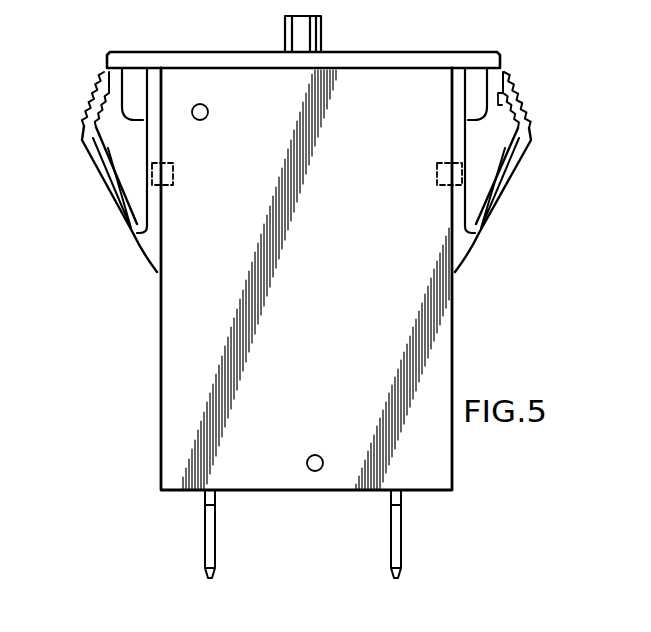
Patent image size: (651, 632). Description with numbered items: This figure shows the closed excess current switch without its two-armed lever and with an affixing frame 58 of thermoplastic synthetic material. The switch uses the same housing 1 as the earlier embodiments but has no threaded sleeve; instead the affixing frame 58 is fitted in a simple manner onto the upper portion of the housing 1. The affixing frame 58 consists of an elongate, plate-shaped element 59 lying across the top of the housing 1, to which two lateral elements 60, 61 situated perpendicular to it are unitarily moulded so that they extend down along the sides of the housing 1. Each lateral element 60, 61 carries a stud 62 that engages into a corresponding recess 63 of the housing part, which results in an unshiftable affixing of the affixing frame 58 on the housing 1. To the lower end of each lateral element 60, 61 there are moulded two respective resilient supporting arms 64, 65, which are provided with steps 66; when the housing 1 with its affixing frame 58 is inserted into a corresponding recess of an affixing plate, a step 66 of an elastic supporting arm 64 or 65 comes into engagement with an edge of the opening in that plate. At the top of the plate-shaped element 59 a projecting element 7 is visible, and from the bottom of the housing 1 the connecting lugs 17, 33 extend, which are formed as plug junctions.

The housing 1 is at (460, 342).
The guide stud 7 is at (311, 30).
The connecting lug 17 is at (212, 547).
The connecting lug 33 is at (397, 547).
The affixing frame 58 is at (303, 40).
The plate-shaped element 59 is at (224, 63).
The lateral element 60 is at (155, 140).
The lateral element 61 is at (460, 117).
The stud 62 is at (297, 161).
The recess 63 is at (168, 182).
The resilient supporting arm 64 is at (297, 89).
The resilient supporting arm 65 is at (103, 173).
The step 66 is at (546, 94).